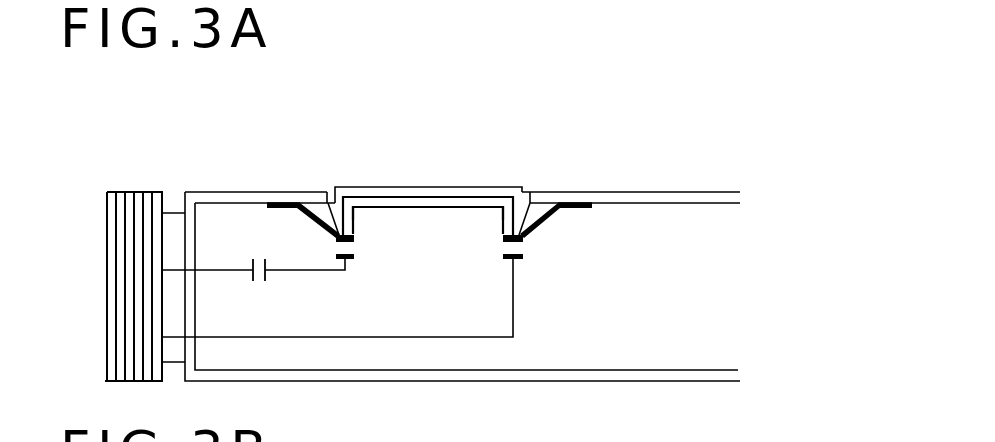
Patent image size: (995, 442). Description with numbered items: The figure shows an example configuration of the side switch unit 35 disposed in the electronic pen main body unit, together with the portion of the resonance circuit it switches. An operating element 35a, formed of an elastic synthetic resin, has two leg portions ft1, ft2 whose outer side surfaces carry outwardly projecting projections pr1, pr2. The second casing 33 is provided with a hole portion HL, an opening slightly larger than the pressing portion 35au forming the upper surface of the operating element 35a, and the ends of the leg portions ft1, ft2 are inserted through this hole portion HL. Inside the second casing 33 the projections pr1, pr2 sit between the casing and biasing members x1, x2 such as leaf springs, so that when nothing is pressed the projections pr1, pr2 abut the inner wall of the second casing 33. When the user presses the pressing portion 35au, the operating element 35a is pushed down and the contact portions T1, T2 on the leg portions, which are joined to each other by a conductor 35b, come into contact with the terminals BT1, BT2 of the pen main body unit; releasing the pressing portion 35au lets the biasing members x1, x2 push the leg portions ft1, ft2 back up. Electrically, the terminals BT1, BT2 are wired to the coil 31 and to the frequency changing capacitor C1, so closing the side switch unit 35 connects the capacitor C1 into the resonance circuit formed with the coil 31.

The coil 31 is at (135, 383).
The second casing 33 is at (628, 192).
The side switch unit 35 is at (373, 99).
The operating element 35a is at (427, 178).
The pressing portion 35au is at (452, 196).
The conductor 35b is at (368, 198).
The hole portion HL is at (527, 189).
The projection pr1 is at (327, 191).
The projection pr2 is at (532, 198).
The biasing member x1 is at (268, 211).
The biasing member x2 is at (585, 211).
The contact portion T1 is at (336, 238).
The contact portion T2 is at (524, 238).
The leg portion ft1 is at (357, 214).
The leg portion ft2 is at (502, 214).
The terminal BT1 is at (354, 257).
The terminal BT2 is at (503, 257).
The frequency changing capacitor C1 is at (258, 282).